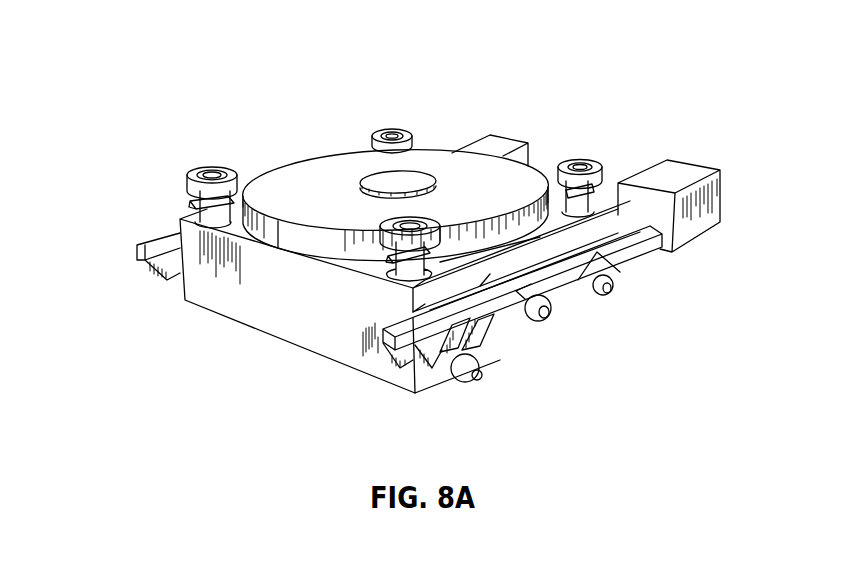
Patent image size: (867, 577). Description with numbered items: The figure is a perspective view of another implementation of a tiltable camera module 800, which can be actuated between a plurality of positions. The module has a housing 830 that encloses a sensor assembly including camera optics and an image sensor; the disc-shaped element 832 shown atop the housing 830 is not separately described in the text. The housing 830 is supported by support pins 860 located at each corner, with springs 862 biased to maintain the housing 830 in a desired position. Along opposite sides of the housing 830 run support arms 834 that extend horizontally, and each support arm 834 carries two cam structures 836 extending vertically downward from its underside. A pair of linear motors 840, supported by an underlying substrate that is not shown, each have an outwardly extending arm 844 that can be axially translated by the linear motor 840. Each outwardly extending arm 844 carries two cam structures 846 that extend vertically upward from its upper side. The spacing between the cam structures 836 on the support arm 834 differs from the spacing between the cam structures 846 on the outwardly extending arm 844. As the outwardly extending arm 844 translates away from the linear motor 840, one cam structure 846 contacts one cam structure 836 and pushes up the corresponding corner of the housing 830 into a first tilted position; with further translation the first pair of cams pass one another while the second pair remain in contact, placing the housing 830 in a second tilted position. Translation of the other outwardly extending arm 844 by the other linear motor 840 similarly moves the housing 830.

The tiltable camera module 800 is at (704, 65).
The housing 830 is at (200, 293).
The rotary platform disk 832 is at (376, 178).
The support arm 834 is at (500, 292).
The cam structure 836 is at (410, 355).
The linear motor 840 is at (700, 222).
The outwardly extending arm 844 is at (577, 290).
The cam structure 846 is at (478, 338).
The support pin 860 is at (190, 184).
The spring 862 is at (188, 205).